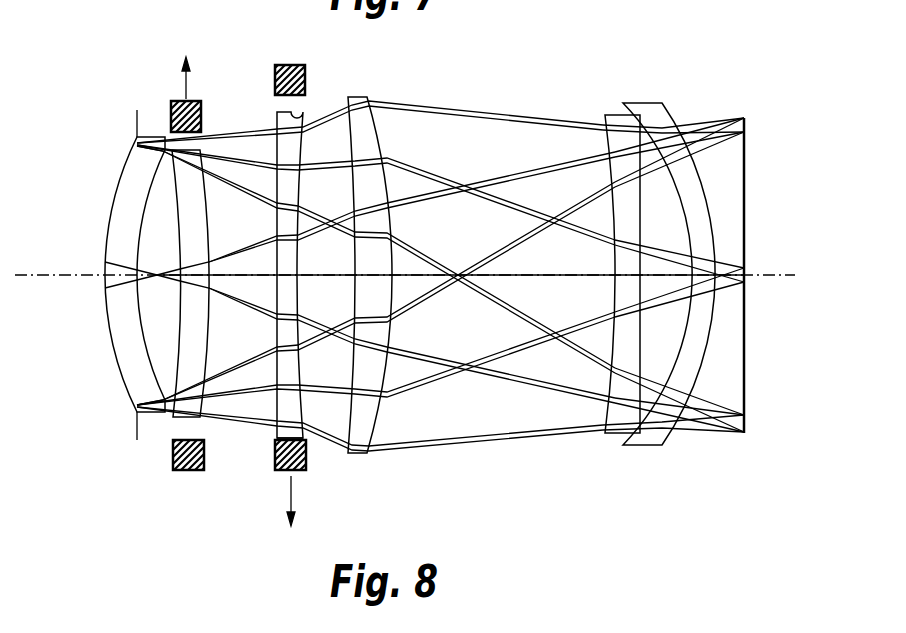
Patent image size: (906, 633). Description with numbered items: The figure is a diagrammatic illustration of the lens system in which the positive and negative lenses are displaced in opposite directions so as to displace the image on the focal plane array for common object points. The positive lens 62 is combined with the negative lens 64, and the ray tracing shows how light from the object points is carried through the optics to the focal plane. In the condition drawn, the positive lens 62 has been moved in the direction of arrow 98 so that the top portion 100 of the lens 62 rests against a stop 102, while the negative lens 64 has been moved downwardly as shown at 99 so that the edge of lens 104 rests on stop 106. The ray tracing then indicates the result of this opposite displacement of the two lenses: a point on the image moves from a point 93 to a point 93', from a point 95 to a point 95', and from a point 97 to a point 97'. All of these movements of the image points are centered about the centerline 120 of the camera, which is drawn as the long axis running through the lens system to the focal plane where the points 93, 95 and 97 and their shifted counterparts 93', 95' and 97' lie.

The positive lens 62 is at (212, 237).
The negative lens 64 is at (318, 116).
The point 93 is at (705, 129).
The point 93' is at (714, 154).
The point 95 is at (711, 263).
The point 95' is at (720, 283).
The point 97 is at (705, 396).
The point 97' is at (714, 423).
The arrow 98 is at (183, 84).
The downward movement 99 is at (292, 496).
The top portion 100 is at (163, 143).
The stop 102 is at (202, 112).
The edge of lens 104 is at (290, 438).
The stop 106 is at (291, 65).
The centerline 120 is at (750, 275).